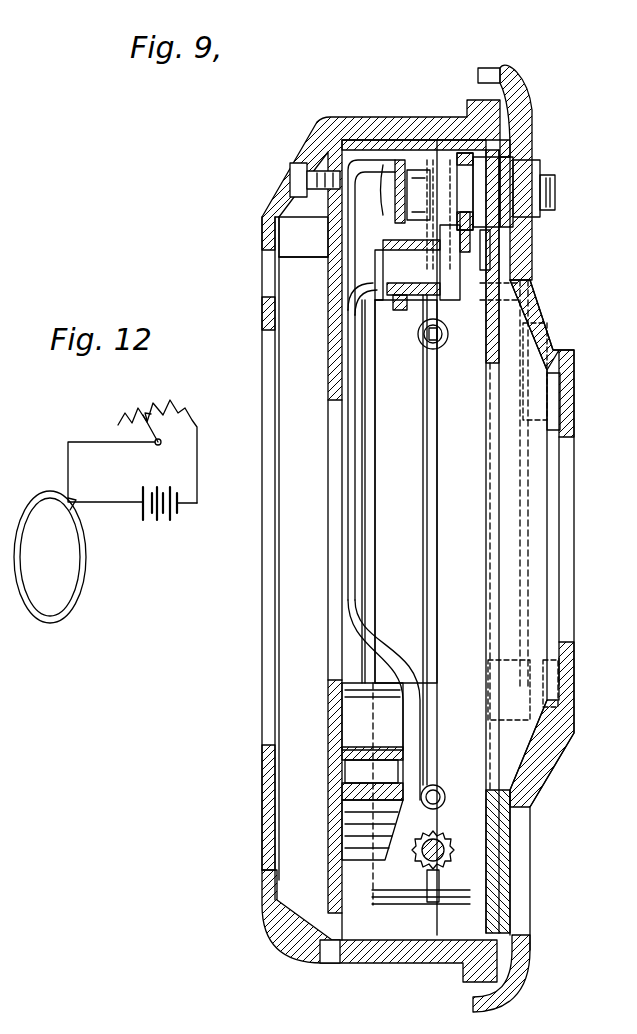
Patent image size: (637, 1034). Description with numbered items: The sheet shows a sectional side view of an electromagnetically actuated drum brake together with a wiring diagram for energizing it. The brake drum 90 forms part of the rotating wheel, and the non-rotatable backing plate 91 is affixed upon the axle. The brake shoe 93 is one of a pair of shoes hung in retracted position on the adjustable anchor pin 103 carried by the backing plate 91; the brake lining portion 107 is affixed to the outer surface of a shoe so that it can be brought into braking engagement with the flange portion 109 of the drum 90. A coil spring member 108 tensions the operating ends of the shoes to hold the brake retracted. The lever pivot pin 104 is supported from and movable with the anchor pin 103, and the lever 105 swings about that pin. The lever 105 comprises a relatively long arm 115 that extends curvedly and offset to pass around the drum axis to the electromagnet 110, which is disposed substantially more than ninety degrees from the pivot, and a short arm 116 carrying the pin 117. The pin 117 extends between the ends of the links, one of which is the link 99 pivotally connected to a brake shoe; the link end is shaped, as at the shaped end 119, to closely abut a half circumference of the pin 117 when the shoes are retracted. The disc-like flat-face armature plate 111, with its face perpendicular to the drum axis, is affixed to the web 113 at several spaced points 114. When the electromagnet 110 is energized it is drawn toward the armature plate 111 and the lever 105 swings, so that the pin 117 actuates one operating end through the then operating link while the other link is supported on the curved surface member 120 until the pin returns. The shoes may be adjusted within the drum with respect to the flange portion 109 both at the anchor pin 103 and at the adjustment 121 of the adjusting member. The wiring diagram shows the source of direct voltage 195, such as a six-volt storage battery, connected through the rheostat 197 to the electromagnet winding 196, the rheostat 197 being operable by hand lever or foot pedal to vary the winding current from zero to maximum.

In FIG. 9, the brake drum 90 is at (256, 226).
In FIG. 9, the backing plate 91 is at (531, 132).
In FIG. 9, the brake shoe 93 is at (385, 487).
In FIG. 9, the link 99 is at (430, 148).
In FIG. 9, the adjustable anchor pin 103 is at (452, 203).
In FIG. 9, the lever pivot pin 104 is at (413, 313).
In FIG. 9, the lever 105 is at (345, 430).
In FIG. 9, the brake lining portion 107 is at (407, 905).
In FIG. 9, the coil spring member 108 is at (443, 344).
In FIG. 9, the flange portion 109 is at (413, 142).
In FIG. 9, the electromagnet 110 is at (392, 732).
In FIG. 9, the armature plate 111 is at (342, 900).
In FIG. 9, the web 113 is at (278, 790).
In FIG. 9, the spaced points 114 is at (386, 192).
In FIG. 9, the long arm 115 is at (386, 637).
In FIG. 9, the short arm 116 is at (388, 182).
In FIG. 9, the pin 117 is at (400, 183).
In FIG. 9, the shaped end 119 is at (327, 232).
In FIG. 9, the curved surface member 120 is at (395, 195).
In FIG. 9, the adjustment of the adjustable member 121 is at (448, 863).
In FIG. 12, the source of direct voltage 195 is at (167, 520).
In FIG. 12, the electromagnet winding 196 is at (85, 580).
In FIG. 12, the rheostat 197 is at (167, 403).